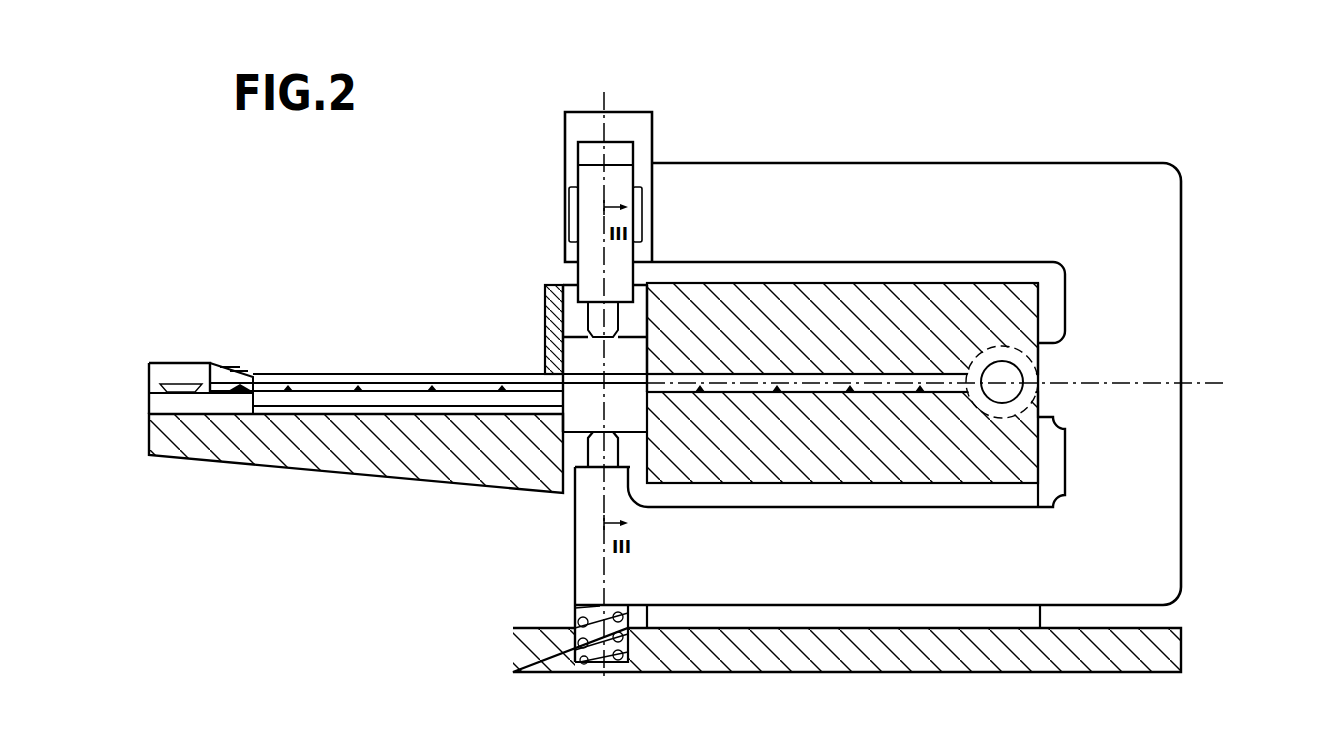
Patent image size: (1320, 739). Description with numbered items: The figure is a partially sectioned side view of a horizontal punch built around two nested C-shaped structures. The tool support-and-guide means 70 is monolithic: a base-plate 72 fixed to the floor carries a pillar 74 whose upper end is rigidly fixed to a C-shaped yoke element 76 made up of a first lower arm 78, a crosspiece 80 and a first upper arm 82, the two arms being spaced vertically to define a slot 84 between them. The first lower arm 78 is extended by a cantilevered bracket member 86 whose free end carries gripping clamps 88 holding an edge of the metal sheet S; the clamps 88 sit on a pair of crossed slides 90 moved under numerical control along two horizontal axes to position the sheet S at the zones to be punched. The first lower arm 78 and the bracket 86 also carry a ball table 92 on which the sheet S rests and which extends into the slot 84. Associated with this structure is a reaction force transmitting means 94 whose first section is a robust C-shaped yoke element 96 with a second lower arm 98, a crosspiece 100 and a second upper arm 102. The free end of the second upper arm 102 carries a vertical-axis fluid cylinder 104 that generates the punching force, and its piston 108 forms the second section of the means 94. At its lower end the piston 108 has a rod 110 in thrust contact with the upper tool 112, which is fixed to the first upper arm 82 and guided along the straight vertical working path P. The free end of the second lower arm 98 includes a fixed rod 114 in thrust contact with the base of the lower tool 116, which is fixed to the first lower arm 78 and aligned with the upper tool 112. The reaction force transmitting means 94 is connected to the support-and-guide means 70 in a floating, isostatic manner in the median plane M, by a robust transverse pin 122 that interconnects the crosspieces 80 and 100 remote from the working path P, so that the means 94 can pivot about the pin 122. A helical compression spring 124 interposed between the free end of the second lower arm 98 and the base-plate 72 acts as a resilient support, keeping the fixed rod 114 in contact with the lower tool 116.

The tool support-and-guide means 70 is at (415, 277).
The base-plate 72 is at (914, 668).
The pillar 74 is at (1030, 617).
The C-shaped element (yoke element) 76 is at (1065, 273).
The first lower arm 78 is at (810, 475).
The crosspiece 80 is at (1036, 306).
The first upper arm 82 is at (878, 290).
The slot 84 is at (778, 372).
The cantilevered bracket member 86 is at (360, 455).
The gripping clamps 88 is at (223, 336).
The crossed slides 90 is at (166, 370).
The ball table 92 is at (292, 397).
The reaction force transmitting means 94 is at (1132, 125).
The C-shaped element (yoke element) 96 is at (1033, 145).
The second lower arm 98 is at (1005, 561).
The crosspiece 100 is at (1160, 441).
The second upper arm 102 is at (1066, 221).
The fluid cylinder 104 is at (622, 117).
The piston 108 is at (623, 173).
The rod 110 is at (597, 310).
The upper tool 112 is at (580, 352).
The fixed rod 114 is at (574, 483).
The lower tool 116 is at (577, 413).
The transverse pin 122 is at (1007, 370).
The helical compression spring 124 is at (600, 664).
The metal sheet S is at (378, 377).
The working path P is at (600, 99).
The median plane M is at (1202, 378).